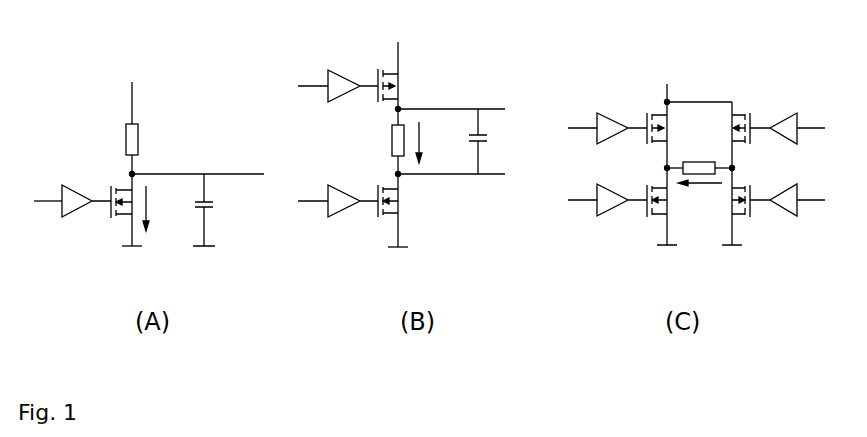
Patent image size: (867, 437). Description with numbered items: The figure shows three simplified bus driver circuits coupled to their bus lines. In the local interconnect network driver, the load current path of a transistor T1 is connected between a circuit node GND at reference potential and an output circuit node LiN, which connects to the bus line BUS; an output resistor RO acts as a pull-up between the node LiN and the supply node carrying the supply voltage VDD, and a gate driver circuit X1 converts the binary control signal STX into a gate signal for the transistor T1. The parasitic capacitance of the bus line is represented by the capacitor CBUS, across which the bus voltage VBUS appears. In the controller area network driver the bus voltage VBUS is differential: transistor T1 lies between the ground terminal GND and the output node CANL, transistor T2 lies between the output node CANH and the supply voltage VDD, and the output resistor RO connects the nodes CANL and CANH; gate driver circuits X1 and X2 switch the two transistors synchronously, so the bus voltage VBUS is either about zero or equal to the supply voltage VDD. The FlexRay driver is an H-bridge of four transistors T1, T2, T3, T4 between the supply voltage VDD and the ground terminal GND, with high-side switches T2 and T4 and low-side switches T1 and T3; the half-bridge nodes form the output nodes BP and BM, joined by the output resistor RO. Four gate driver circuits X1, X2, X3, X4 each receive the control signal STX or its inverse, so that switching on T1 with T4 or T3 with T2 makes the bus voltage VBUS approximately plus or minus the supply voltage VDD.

In FIG. 1A, the supply voltage VDD is at (147, 98).
In FIG. 1B, the supply voltage VDD is at (411, 48).
In FIG. 1C, the supply voltage VDD is at (699, 86).
In FIG. 1A, the output resistor RO is at (144, 149).
In FIG. 1B, the output resistor RO is at (386, 149).
In FIG. 1C, the output resistor RO is at (699, 159).
In FIG. 1A, the output circuit node LiN is at (122, 166).
In FIG. 1A, the bus line BUS is at (198, 160).
In FIG. 1A, the transistor T1 is at (113, 210).
In FIG. 1B, the transistor T1 is at (379, 210).
In FIG. 1C, the transistor T1 is at (647, 206).
In FIG. 1B, the transistor T2 is at (379, 81).
In FIG. 1C, the transistor T2 is at (647, 130).
In FIG. 1C, the transistor T3 is at (745, 206).
In FIG. 1C, the transistor T4 is at (745, 130).
In FIG. 1A, the gate driver circuit X1 is at (86, 196).
In FIG. 1B, the gate driver circuit X1 is at (353, 213).
In FIG. 1C, the gate driver circuit X1 is at (622, 212).
In FIG. 1B, the gate driver circuit X2 is at (353, 77).
In FIG. 1C, the gate driver circuit X2 is at (622, 118).
In FIG. 1C, the gate driver circuit X3 is at (773, 212).
In FIG. 1C, the gate driver circuit X4 is at (773, 118).
In FIG. 1A, the control signal STX is at (41, 191).
In FIG. 1B, the control signal STX is at (305, 50).
In FIG. 1C, the control signal STX is at (820, 161).
In FIG. 1A, the bus voltage VBUS is at (163, 208).
In FIG. 1B, the bus voltage VBUS is at (438, 142).
In FIG. 1C, the bus voltage VBUS is at (700, 198).
In FIG. 1A, the capacitor CBUS is at (222, 210).
In FIG. 1B, the capacitor CBUS is at (497, 141).
In FIG. 1A, the circuit node GND is at (155, 260).
In FIG. 1B, the circuit node GND is at (411, 261).
In FIG. 1C, the circuit node GND is at (699, 255).
In FIG. 1B, the output node CANH is at (392, 100).
In FIG. 1B, the output node CANL is at (388, 165).
In FIG. 1C, the second output node BM is at (657, 160).
In FIG. 1C, the first output node BP is at (727, 159).